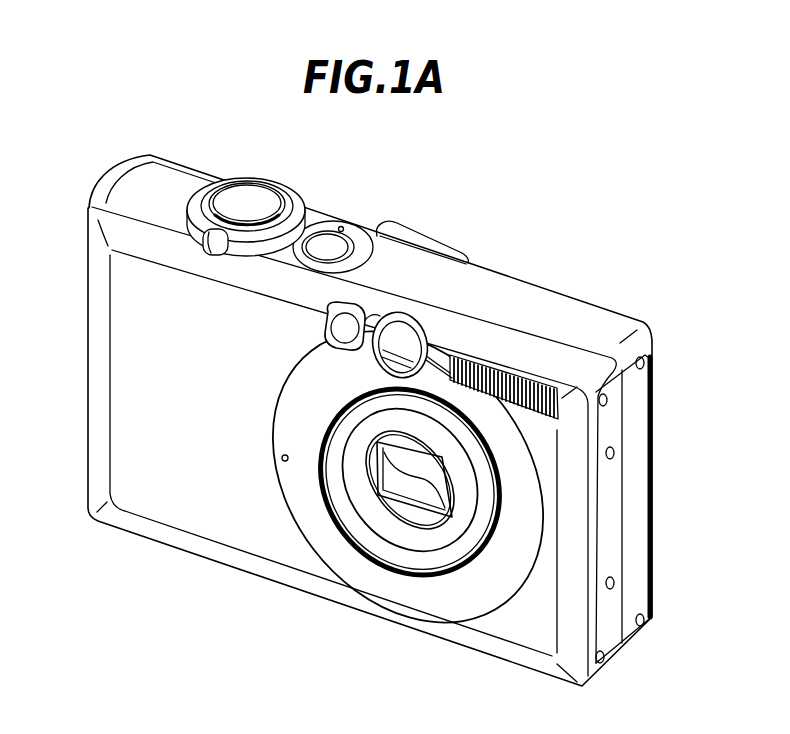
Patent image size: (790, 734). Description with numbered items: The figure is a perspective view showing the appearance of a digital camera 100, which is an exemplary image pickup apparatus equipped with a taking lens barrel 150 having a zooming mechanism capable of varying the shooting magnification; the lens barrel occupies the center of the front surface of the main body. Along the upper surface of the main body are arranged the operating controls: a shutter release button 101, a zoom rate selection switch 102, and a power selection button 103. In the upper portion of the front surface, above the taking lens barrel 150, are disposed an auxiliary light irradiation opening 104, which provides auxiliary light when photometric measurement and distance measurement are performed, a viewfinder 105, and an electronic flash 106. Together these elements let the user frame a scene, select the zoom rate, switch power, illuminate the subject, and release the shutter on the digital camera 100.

The digital camera 100 is at (583, 160).
The shutter release button 101 is at (250, 193).
The zoom rate selection switch 102 is at (292, 203).
The power selection button 103 is at (326, 242).
The auxiliary light irradiation opening 104 is at (348, 327).
The viewfinder 105 is at (400, 347).
The electronic flash 106 is at (507, 367).
The taking lens barrel 150 is at (413, 537).